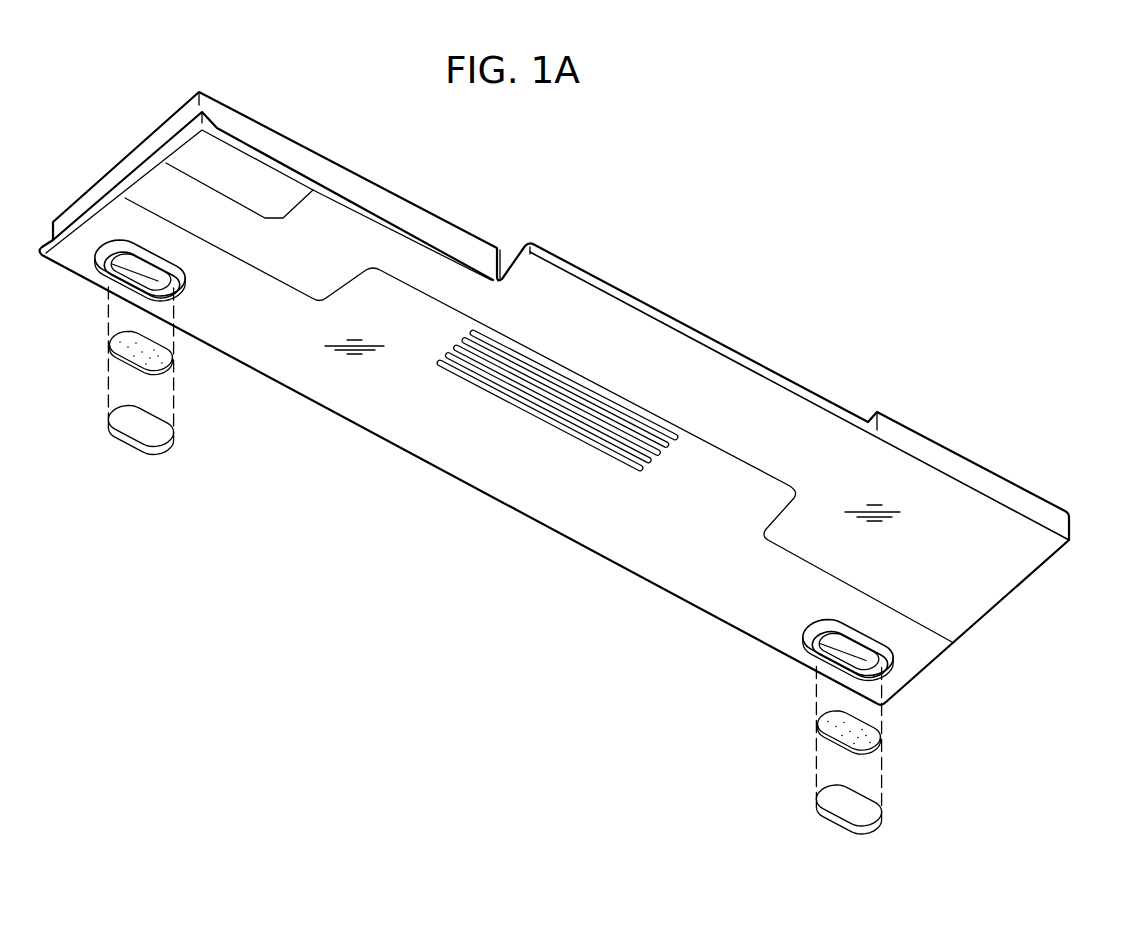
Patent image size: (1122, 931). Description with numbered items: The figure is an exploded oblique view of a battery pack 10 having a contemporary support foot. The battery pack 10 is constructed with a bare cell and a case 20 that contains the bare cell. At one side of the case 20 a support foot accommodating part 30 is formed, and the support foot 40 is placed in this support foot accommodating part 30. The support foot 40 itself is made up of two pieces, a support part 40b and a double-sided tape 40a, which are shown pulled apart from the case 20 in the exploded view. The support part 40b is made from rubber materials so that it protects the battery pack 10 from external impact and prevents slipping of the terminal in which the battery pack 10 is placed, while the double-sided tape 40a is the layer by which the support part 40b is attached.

The battery pack 10 is at (790, 280).
The case 20 is at (420, 440).
The support foot accommodating part 30 is at (176, 267).
The support foot 40 is at (277, 453).
The double-sided tape 40a is at (147, 373).
The support part 40b is at (165, 450).